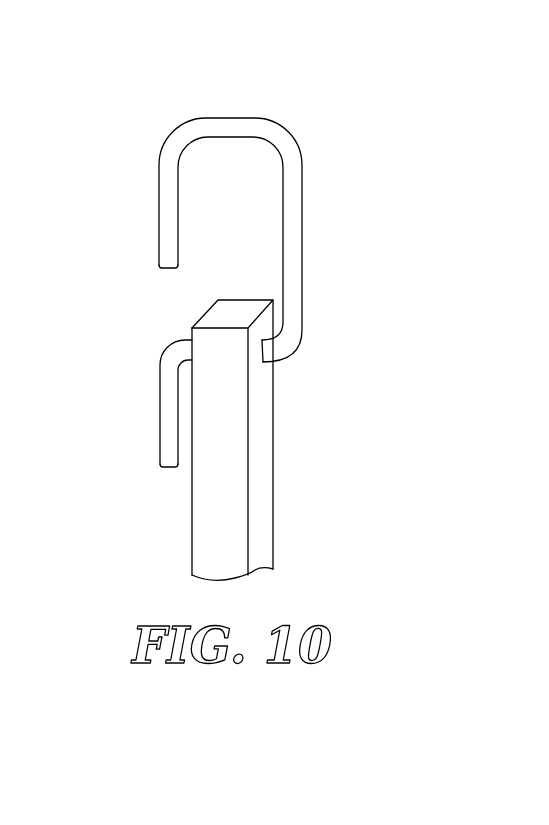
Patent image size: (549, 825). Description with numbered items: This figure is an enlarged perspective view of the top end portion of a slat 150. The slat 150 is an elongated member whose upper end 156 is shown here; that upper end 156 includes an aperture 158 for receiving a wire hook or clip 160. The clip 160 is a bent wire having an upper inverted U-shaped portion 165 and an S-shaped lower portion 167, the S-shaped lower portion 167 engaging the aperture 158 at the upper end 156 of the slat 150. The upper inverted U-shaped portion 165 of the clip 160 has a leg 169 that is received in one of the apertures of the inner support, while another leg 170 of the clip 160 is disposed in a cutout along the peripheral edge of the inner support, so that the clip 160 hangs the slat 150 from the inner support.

The slat 150 is at (125, 332).
The upper end 156 is at (265, 423).
The aperture 158 is at (262, 366).
The wire hook or clip 160 is at (302, 113).
The upper inverted U-shaped portion 165 is at (232, 125).
The S-shaped lower portion 167 is at (167, 448).
The leg 169 is at (165, 233).
The leg 170 is at (293, 212).